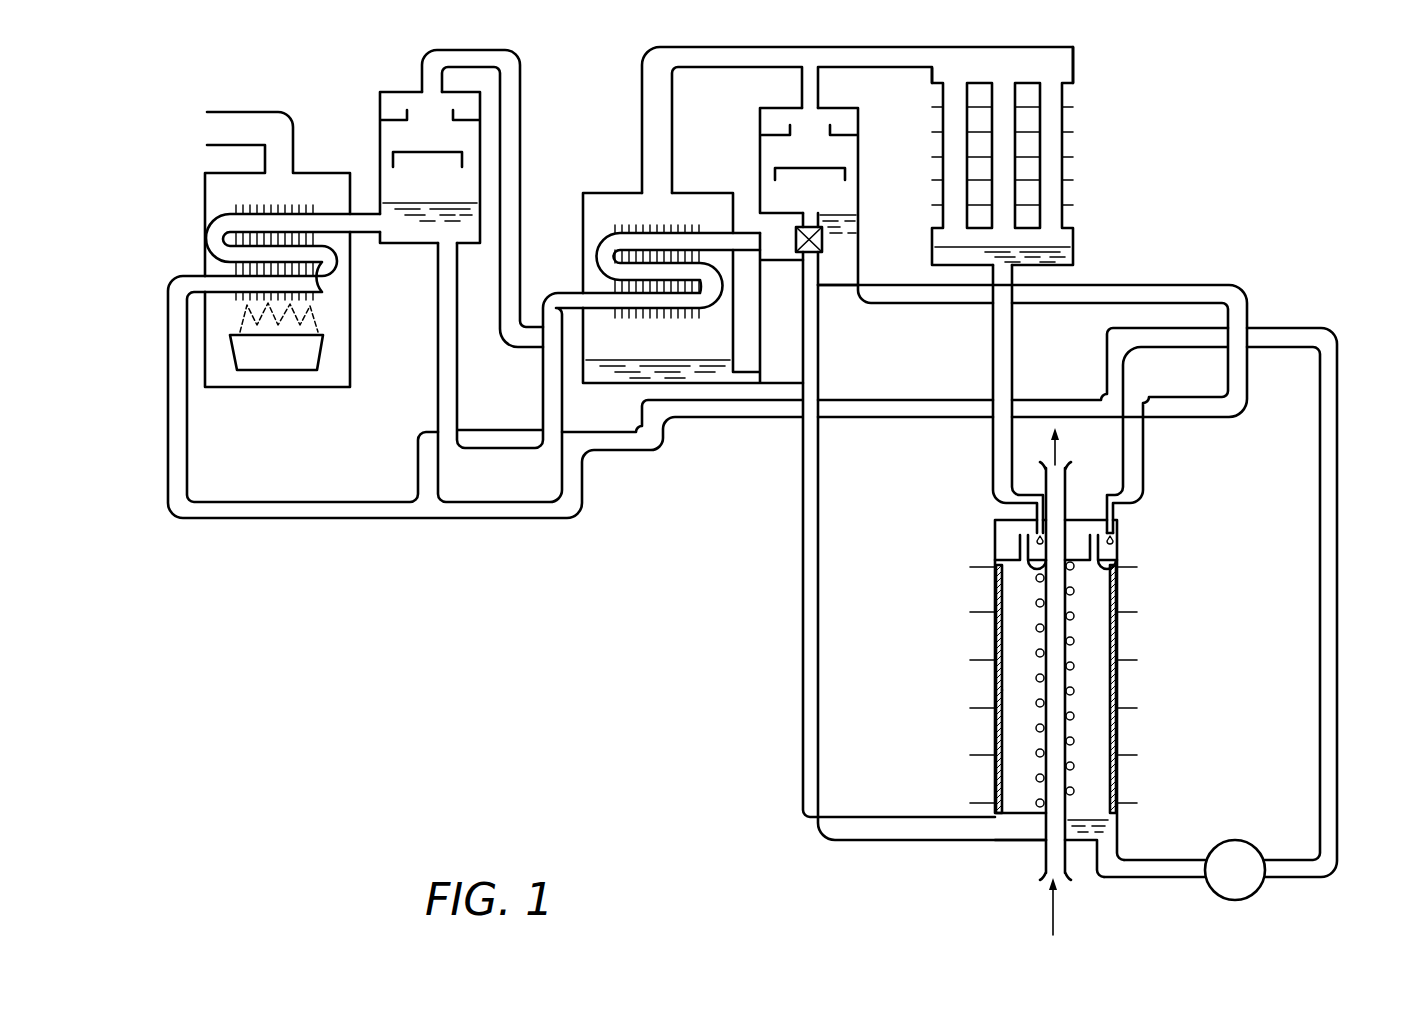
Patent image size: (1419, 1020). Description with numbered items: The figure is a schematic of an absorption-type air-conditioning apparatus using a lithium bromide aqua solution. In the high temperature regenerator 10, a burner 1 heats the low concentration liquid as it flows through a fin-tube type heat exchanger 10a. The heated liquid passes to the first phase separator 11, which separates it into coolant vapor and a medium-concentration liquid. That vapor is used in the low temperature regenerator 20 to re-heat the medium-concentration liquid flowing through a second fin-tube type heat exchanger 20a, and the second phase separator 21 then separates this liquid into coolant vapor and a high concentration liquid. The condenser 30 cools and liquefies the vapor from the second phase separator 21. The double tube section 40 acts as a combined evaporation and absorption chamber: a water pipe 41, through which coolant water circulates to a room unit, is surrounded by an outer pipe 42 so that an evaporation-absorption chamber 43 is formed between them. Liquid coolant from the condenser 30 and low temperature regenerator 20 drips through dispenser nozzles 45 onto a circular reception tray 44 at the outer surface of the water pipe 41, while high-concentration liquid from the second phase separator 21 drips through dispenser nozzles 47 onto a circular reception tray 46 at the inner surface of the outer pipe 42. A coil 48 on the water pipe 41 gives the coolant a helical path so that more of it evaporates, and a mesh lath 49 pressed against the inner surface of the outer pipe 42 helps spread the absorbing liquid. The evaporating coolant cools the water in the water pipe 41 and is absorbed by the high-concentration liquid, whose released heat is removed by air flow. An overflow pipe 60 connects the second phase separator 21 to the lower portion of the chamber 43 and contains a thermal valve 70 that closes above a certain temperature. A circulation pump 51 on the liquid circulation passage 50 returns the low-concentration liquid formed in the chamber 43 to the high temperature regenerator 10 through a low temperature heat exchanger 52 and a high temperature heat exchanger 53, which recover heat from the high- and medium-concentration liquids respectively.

The burner 1 is at (325, 352).
The high temperature regenerator 10 is at (352, 318).
The fin-tube type heat exchanger 10a is at (227, 221).
The first phase separator 11 is at (378, 120).
The low temperature regenerator 20 is at (622, 192).
The fin-tube type heat exchanger 20a is at (600, 236).
The second phase separator 21 is at (760, 150).
The condenser 30 is at (1075, 63).
The double tube section 40 is at (1180, 620).
The water pipe 41 is at (1043, 852).
The outer pipe 42 is at (1115, 730).
The evaporation-absorption chamber 43 is at (1003, 722).
The circular reception tray 44 is at (1003, 578).
The dispenser nozzles 45 is at (1035, 522).
The circular reception tray 46 is at (1120, 580).
The dispenser nozzles 47 is at (1113, 527).
The coil 48 is at (1090, 665).
The mesh lath 49 is at (1002, 630).
The liquid circulation passage 50 is at (1338, 670).
The circulation pump 51 is at (1235, 840).
The low temperature heat exchanger 52 is at (1212, 419).
The high temperature heat exchanger 53 is at (497, 518).
The overflow pipe 60 is at (802, 636).
The thermal valve 70 is at (822, 242).